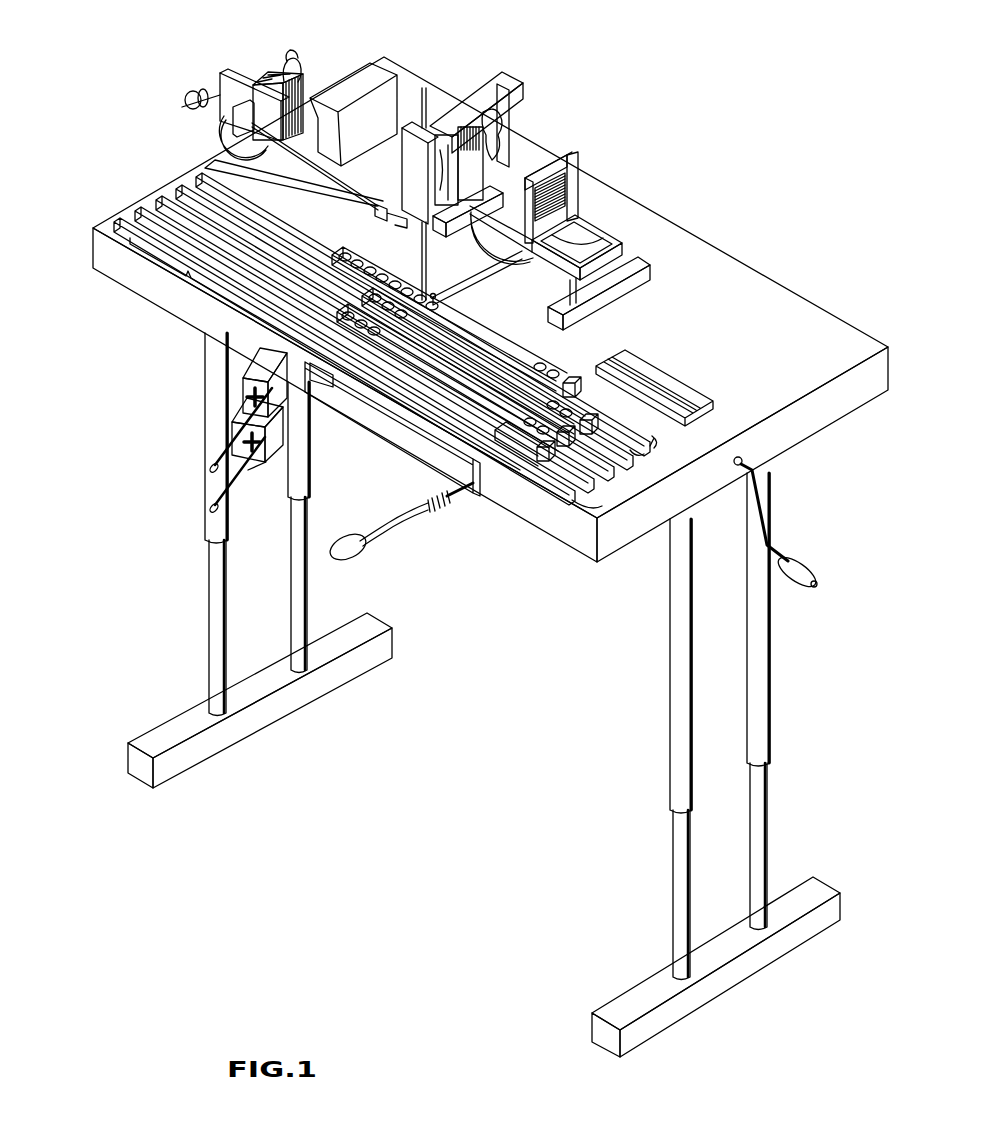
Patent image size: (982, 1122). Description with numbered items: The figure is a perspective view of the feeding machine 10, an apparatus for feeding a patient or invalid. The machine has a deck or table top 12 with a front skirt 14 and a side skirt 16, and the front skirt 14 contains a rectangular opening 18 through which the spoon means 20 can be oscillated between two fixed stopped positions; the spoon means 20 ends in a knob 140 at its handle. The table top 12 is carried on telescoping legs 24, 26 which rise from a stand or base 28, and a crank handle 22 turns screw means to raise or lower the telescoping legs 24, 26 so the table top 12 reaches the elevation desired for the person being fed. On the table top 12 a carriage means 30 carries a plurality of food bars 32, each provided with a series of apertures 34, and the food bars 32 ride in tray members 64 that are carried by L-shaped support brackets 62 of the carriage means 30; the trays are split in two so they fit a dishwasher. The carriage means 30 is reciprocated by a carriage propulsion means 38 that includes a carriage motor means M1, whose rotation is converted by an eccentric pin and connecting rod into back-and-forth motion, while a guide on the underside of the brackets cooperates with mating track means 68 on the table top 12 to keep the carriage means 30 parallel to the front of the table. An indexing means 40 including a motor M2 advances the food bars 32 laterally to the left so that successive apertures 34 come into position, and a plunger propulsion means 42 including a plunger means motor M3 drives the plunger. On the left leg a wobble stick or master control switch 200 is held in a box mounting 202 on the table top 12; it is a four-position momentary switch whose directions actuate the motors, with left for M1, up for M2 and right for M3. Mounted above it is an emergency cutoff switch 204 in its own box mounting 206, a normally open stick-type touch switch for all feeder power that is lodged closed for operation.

The feeding machine 10 is at (760, 225).
The deck or table top 12 is at (823, 311).
The front skirt 14 is at (535, 522).
The side skirt 16 is at (620, 552).
The rectangular opening 18 is at (407, 433).
The spoon means 20 is at (410, 536).
The crank handle 22 is at (790, 560).
The telescoping leg 24 is at (205, 410).
The telescoping leg 26 is at (211, 583).
The stand or base 28 is at (273, 714).
The carriage means 30 is at (640, 482).
The food bar 32 is at (582, 410).
The apertures 34 is at (567, 381).
The carriage propulsion means 38 is at (508, 268).
The indexing means 40 is at (168, 110).
The plunger propulsion means 42 is at (545, 104).
The L-shaped support bracket 62 is at (658, 443).
The tray members 64 is at (641, 457).
The track means 68 is at (318, 185).
The handle knob 140 is at (351, 550).
The wobble stick switch or master control switch 200 is at (210, 500).
The box mounting 202 is at (262, 463).
The emergency cutoff switch 204 is at (223, 453).
The box mounting 206 is at (253, 367).
The carriage motor means M1 is at (580, 203).
The motor M2 is at (288, 56).
The plunger means motor M3 is at (465, 118).